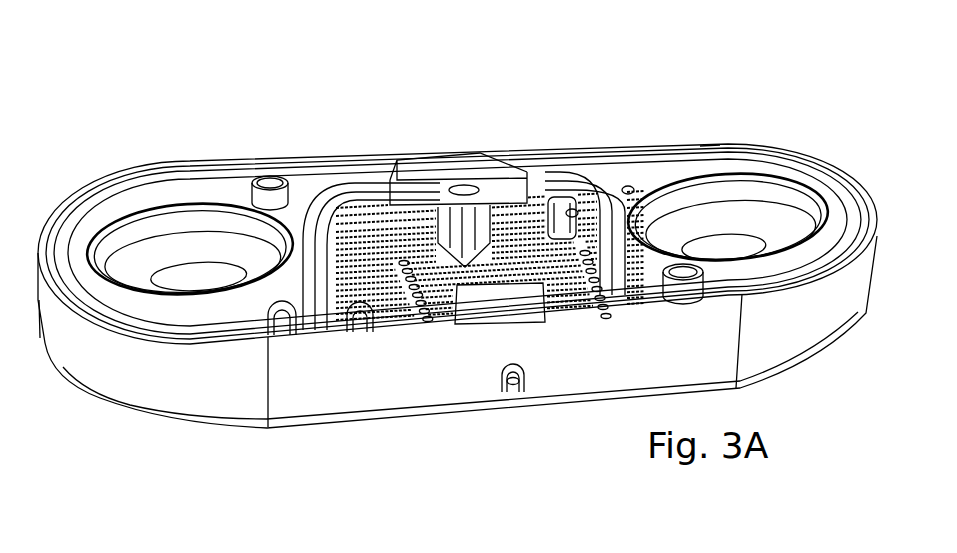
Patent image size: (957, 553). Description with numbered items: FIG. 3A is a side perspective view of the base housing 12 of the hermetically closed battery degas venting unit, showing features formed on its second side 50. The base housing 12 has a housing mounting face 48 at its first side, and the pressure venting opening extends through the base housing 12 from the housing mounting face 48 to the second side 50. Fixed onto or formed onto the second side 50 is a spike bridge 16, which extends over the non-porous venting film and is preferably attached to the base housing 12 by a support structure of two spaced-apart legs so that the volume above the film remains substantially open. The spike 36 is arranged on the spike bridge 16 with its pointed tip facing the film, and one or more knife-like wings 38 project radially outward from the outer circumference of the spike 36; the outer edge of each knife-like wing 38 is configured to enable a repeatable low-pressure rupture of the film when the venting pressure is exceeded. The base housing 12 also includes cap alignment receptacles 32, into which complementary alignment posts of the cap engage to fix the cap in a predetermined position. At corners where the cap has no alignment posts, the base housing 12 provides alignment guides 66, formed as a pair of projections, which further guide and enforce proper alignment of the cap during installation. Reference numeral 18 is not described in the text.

The base housing 12 is at (90, 468).
The spike bridge 16 is at (445, 197).
The cup receptacles 18 is at (192, 274).
The cap alignment receptacle 32 is at (267, 181).
The spike 36 is at (473, 237).
The knife-like wing 38 is at (427, 220).
The housing mounting face 48 is at (272, 487).
The second side of the base housing 50 is at (735, 80).
The alignment guides 66 is at (628, 190).